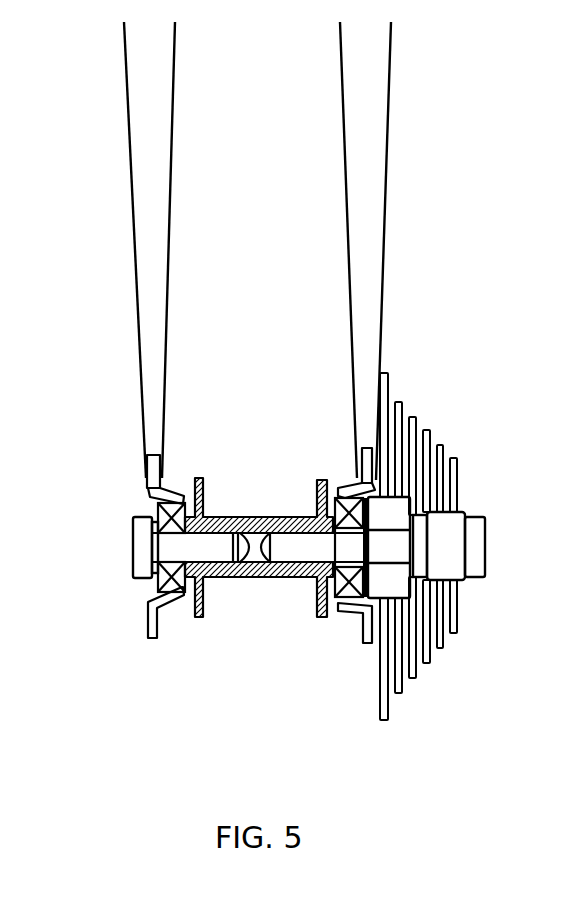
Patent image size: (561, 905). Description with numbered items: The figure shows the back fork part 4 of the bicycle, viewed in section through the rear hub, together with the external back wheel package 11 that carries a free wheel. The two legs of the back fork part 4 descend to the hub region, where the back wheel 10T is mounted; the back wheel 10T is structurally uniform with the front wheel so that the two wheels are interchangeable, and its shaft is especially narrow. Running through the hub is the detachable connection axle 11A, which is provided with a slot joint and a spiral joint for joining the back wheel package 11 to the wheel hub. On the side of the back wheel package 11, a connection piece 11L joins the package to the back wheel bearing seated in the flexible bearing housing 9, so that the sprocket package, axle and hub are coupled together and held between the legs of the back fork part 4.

The back fork part 4 is at (360, 228).
The flexible bearing housing 9 is at (147, 478).
The back wheel 10T is at (200, 614).
The detachable connection axle 11A is at (355, 548).
The connection piece 11L is at (355, 568).
The back wheel package 11 is at (417, 423).